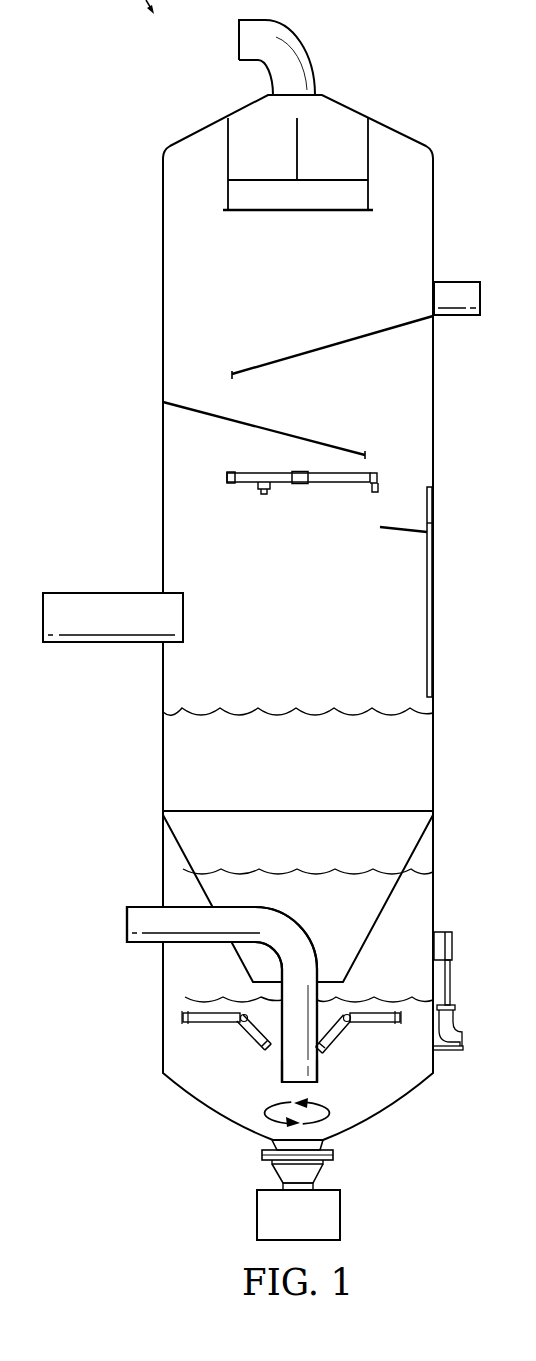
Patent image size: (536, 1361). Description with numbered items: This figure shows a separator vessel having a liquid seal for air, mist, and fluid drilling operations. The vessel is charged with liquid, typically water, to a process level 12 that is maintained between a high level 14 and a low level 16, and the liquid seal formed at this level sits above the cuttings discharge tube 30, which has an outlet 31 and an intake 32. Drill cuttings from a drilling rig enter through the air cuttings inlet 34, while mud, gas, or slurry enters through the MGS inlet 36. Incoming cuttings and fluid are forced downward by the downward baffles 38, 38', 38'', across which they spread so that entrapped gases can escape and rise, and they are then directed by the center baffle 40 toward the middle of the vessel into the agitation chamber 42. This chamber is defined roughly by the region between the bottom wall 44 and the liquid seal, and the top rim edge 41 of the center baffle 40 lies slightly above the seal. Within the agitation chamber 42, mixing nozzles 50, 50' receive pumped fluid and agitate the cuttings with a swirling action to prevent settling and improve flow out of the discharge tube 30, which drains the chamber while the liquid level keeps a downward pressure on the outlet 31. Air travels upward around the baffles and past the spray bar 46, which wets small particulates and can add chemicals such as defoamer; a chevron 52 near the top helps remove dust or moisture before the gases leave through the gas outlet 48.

The process level 12 is at (183, 870).
The high level 14 is at (180, 708).
The low level 16 is at (185, 997).
The cuttings discharge tube 30 is at (225, 917).
The outlet 31 is at (125, 923).
The intake 32 is at (318, 1070).
The air cuttings inlet 34 is at (113, 593).
The mud, gas, slurry (MGS) inlet 36 is at (482, 297).
The downward baffle 38 is at (404, 592).
The downward baffle 38' is at (332, 336).
The downward baffle 38'' is at (264, 421).
The center baffle 40 is at (420, 850).
The top rim edge 41 is at (368, 810).
The agitation chamber 42 is at (423, 902).
The bottom wall 44 is at (377, 1122).
The spray bar 46 is at (322, 482).
The gas outlet 48 is at (303, 48).
The mixing nozzle 50 is at (226, 1042).
The mixing nozzle 50' is at (358, 1042).
The chevron 52 is at (370, 128).